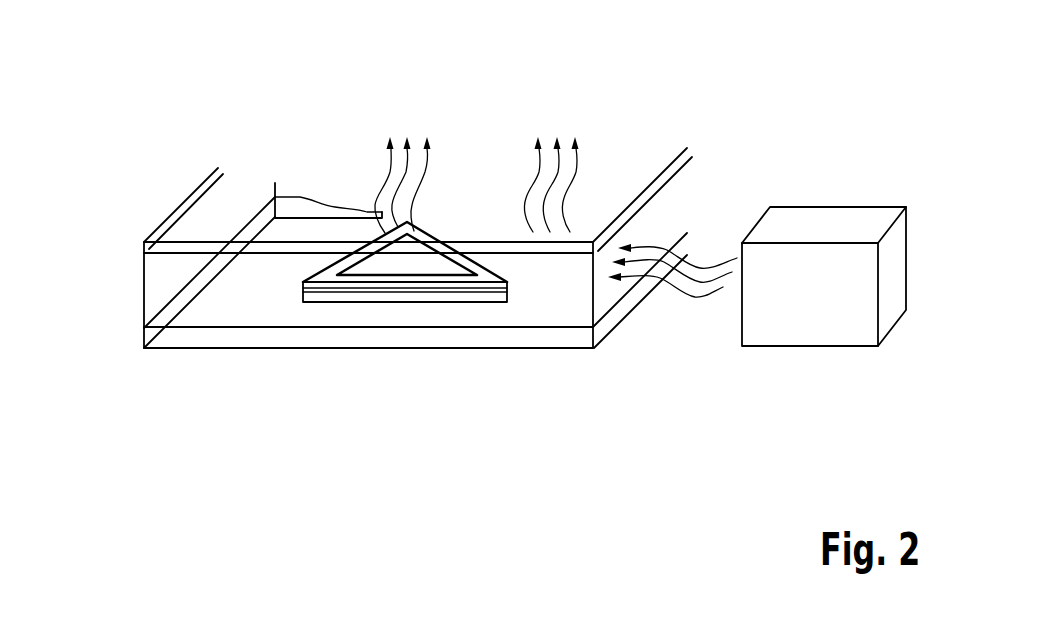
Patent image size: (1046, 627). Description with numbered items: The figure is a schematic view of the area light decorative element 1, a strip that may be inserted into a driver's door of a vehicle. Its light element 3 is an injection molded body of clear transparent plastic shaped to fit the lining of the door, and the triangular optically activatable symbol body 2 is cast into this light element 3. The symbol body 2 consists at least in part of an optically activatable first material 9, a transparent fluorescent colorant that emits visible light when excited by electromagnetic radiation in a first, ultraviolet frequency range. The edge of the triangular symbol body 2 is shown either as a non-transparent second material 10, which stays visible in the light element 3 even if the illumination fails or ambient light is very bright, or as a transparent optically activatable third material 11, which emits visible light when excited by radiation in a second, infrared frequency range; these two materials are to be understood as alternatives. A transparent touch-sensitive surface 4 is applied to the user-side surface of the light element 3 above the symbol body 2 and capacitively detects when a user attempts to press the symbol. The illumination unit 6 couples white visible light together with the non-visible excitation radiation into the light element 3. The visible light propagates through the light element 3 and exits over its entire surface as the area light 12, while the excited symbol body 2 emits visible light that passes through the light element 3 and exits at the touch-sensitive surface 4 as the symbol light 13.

The area light decorative element 1 is at (197, 96).
The optically activatable symbol body 2 is at (359, 306).
The light element 3 is at (130, 304).
The touch-sensitive surface 4 is at (210, 217).
The illumination unit 6 is at (797, 347).
The optically activatable first material 9 is at (412, 293).
The non-transparent second material 10 is at (482, 278).
The optically activatable third material 11 is at (407, 254).
The area light 12 is at (530, 187).
The symbol light 13 is at (382, 186).